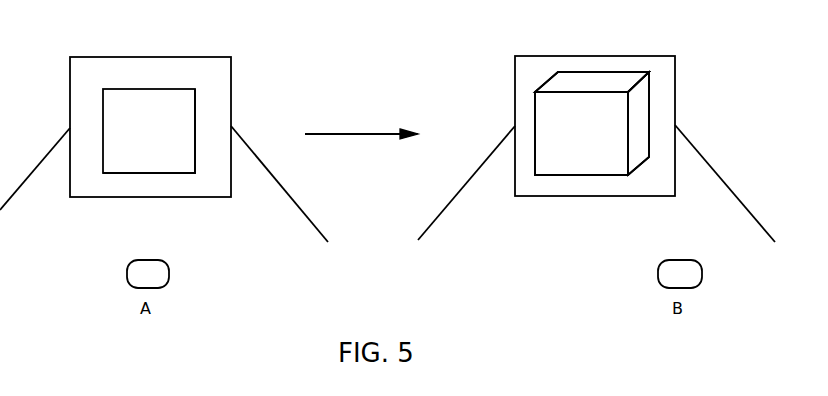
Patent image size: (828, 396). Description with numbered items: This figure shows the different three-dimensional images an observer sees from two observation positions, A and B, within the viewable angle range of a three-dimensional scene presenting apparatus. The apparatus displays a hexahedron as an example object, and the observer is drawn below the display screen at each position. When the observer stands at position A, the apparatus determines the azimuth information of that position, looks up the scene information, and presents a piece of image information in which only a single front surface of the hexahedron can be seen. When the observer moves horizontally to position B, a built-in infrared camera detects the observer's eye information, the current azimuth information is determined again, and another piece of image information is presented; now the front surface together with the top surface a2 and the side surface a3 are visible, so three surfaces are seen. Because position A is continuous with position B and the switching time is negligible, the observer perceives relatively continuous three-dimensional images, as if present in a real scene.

The surface a2 is at (592, 82).
The surface a3 is at (638, 123).